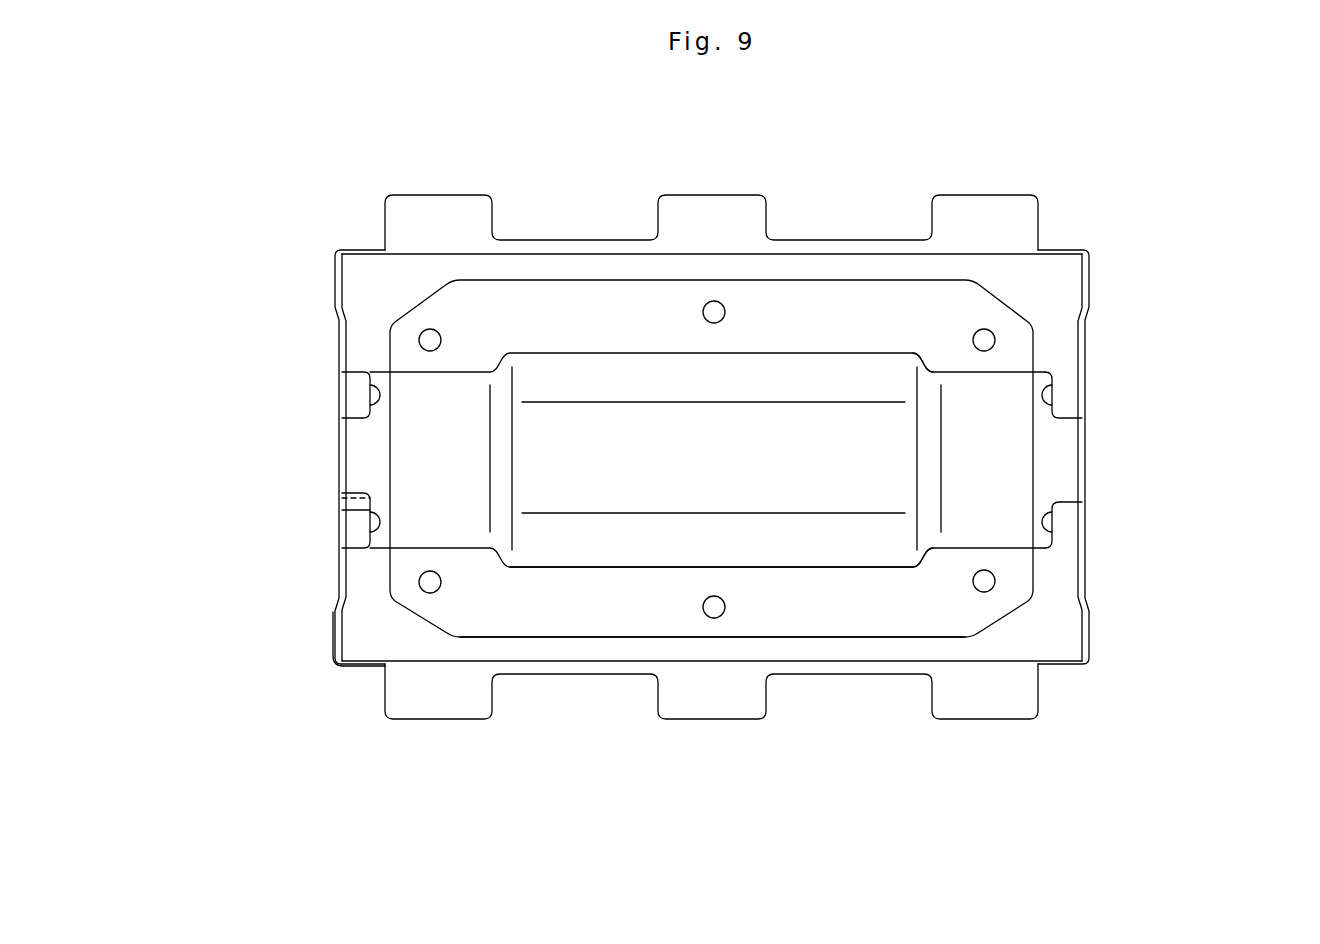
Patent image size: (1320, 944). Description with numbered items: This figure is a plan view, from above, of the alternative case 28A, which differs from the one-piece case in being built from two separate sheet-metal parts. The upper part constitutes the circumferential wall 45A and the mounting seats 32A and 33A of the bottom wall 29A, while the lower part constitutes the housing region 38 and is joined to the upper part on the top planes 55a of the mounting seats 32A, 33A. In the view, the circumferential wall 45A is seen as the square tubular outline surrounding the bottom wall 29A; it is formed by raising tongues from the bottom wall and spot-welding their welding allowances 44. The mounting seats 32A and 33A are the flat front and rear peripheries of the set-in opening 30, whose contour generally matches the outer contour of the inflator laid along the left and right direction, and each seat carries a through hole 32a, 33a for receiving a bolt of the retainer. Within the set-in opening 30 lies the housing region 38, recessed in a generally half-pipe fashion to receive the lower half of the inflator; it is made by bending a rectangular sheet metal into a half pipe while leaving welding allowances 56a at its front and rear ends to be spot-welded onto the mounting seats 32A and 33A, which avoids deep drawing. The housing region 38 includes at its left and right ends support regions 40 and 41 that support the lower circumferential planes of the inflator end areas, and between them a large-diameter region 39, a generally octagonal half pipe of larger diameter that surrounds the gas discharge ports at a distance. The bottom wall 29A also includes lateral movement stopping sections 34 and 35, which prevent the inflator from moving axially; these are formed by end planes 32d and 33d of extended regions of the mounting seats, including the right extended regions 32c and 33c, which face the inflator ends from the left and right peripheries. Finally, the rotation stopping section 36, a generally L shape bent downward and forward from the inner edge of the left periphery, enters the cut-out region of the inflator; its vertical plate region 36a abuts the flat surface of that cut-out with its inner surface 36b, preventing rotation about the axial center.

The case 28A is at (294, 197).
The circumferential wall 45A is at (334, 345).
The bottom wall 29A is at (556, 298).
The mounting seat 32A is at (711, 388).
The through hole 32a is at (714, 310).
The through hole 33a is at (714, 613).
The top plane 55a is at (785, 305).
The welding allowance 56a is at (832, 317).
The rotation stopping section 36 is at (372, 493).
The vertical plate region 36a is at (711, 458).
The inner surface 36b is at (353, 492).
The right extended region 32c is at (340, 374).
The right extended region 33c is at (342, 540).
The end plane 32d is at (1043, 402).
The end plane 33d is at (1043, 513).
The lateral movement stopping section 34 is at (203, 370).
The lateral movement stopping section 35 is at (1190, 393).
The support region 40 is at (467, 462).
The support region 41 is at (955, 458).
The housing region 38 is at (806, 555).
The large-diameter region 39 is at (627, 545).
The set-in opening 30 is at (882, 553).
The welding allowance 44 is at (333, 635).
The mounting seat 33A is at (540, 617).